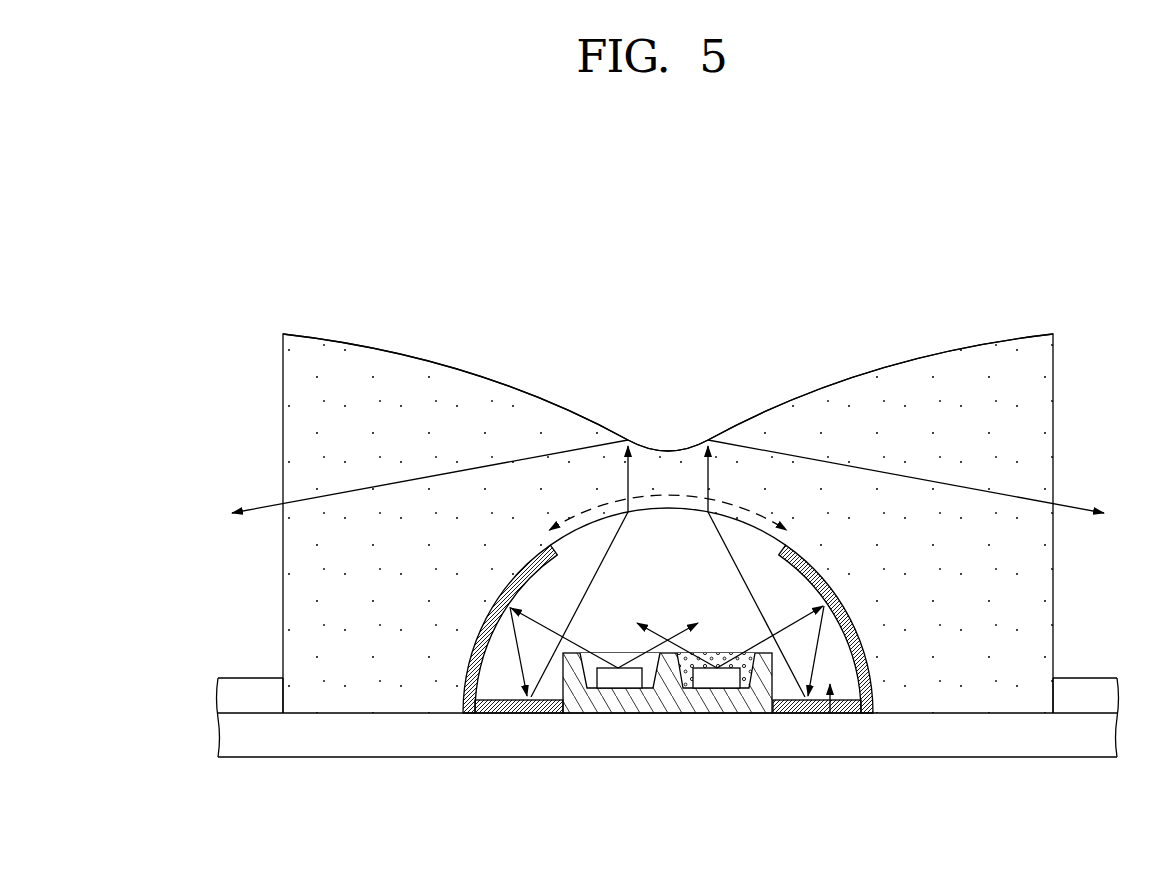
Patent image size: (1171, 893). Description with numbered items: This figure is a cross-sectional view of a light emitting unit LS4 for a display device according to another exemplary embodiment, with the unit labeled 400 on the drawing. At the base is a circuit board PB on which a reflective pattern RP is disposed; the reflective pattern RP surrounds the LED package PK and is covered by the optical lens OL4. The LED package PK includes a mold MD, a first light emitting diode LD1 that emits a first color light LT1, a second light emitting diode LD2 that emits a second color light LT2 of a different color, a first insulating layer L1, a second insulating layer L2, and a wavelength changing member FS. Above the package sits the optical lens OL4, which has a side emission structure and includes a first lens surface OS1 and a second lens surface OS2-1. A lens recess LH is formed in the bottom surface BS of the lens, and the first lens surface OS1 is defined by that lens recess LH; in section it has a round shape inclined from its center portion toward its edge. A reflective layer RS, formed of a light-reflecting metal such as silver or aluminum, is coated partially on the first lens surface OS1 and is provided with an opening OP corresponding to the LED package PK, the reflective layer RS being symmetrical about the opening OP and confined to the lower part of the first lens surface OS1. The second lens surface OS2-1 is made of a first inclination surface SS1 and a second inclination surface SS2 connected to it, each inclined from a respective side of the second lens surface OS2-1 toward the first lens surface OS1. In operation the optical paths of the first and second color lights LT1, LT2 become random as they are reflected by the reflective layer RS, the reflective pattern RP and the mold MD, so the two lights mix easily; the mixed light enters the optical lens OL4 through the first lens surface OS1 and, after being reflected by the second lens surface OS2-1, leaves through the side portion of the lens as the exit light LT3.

The light emitting unit LS4 is at (668, 564).
The optical lens OL4 is at (668, 584).
The second lens surface OS2-1 is at (667, 381).
The first lens surface OS1 is at (813, 562).
The first inclination surface SS1 is at (561, 406).
The second inclination surface SS2 is at (775, 406).
The first color light LT1 is at (612, 543).
The second color light LT2 is at (723, 543).
The exit light LT3 is at (666, 483).
The opening OP is at (667, 488).
The reflective layer RS is at (481, 627).
The bottom surface BS is at (352, 714).
The circuit board PB is at (416, 745).
The reflective pattern RP is at (513, 709).
The mold MD is at (575, 692).
The first insulating layer L1 is at (590, 684).
The first light emitting diode LD1 is at (620, 686).
The second light emitting diode LD2 is at (710, 746).
The second insulating layer L2 is at (745, 684).
The wavelength changing member FS is at (766, 676).
The lens recess LH is at (832, 713).
The light source unit 400 is at (1085, 698).
The LED package PK is at (670, 760).